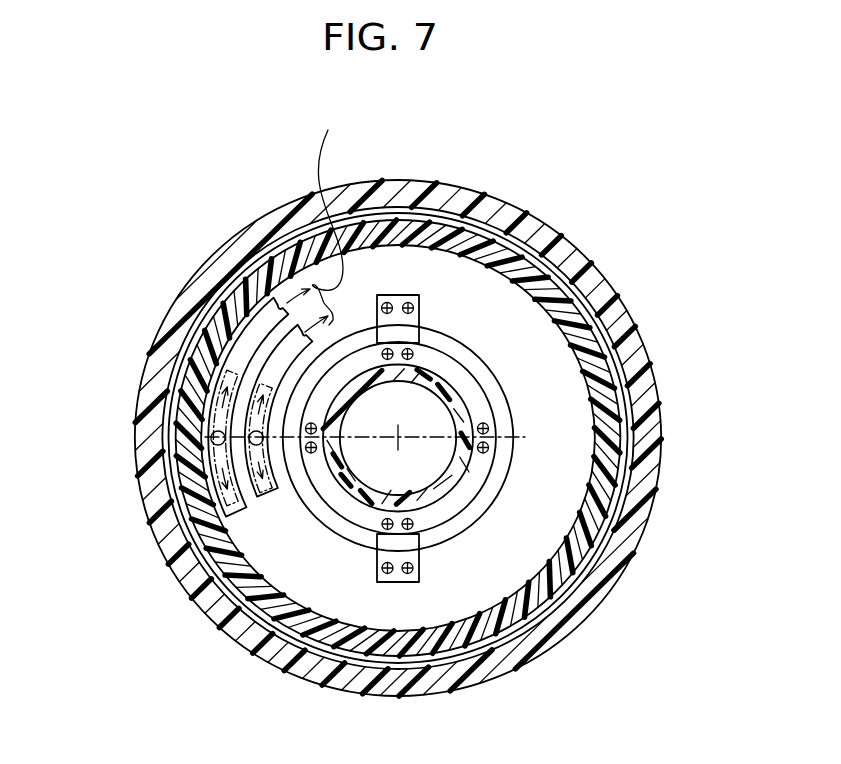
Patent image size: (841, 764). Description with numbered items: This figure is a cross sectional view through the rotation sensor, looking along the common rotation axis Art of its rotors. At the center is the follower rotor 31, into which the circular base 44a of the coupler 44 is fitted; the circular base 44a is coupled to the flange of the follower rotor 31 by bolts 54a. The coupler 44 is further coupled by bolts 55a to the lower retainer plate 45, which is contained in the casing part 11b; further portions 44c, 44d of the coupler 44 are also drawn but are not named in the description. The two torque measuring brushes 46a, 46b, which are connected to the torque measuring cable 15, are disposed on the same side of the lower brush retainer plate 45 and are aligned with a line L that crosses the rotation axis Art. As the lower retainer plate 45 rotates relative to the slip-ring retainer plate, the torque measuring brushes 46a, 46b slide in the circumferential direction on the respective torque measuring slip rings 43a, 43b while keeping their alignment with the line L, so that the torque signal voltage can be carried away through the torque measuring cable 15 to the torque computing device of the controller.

The lid 11b is at (593, 595).
The lower retainer plate 45 is at (605, 370).
The coupler 44 is at (470, 367).
The circular base of the coupler 44a is at (437, 362).
The inner ring of torque detecting unit 44c is at (413, 336).
The connector blocks of torque detecting unit 44d is at (402, 294).
The bolts 54a is at (489, 428).
The bolts 55a is at (388, 582).
The follower rotor 31 is at (455, 478).
The torque measuring brush 46b is at (212, 432).
The torque measuring brush 46a is at (250, 442).
The torque measuring slip ring 43b is at (222, 505).
The torque measuring slip ring 43a is at (258, 495).
The torque measuring cable 15 is at (442, 208).
The line L is at (355, 440).
The rotation axis Art is at (405, 442).